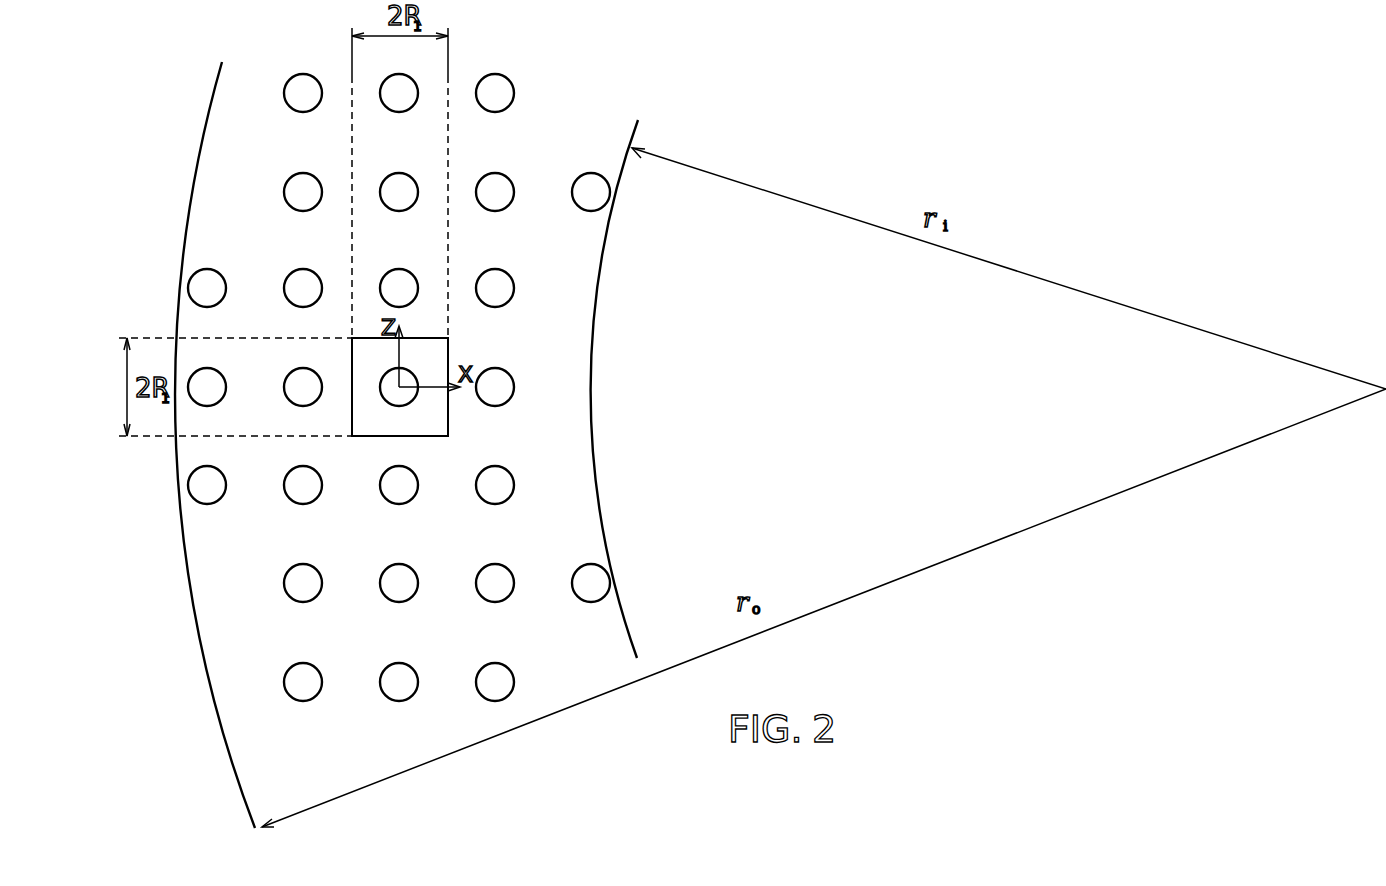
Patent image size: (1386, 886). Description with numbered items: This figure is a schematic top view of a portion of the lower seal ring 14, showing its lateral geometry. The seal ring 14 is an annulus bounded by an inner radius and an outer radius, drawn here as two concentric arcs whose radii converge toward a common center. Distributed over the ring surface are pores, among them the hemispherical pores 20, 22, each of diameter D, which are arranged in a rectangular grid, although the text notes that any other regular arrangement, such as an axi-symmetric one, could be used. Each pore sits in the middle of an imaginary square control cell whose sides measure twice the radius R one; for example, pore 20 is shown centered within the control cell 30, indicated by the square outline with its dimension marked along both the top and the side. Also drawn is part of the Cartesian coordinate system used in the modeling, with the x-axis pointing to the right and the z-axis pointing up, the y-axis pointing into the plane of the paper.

The lower seal ring 14 is at (243, 216).
The hemispherical pore 20 is at (397, 398).
The hemispherical pore 22 is at (498, 397).
The control cell 30 is at (431, 425).